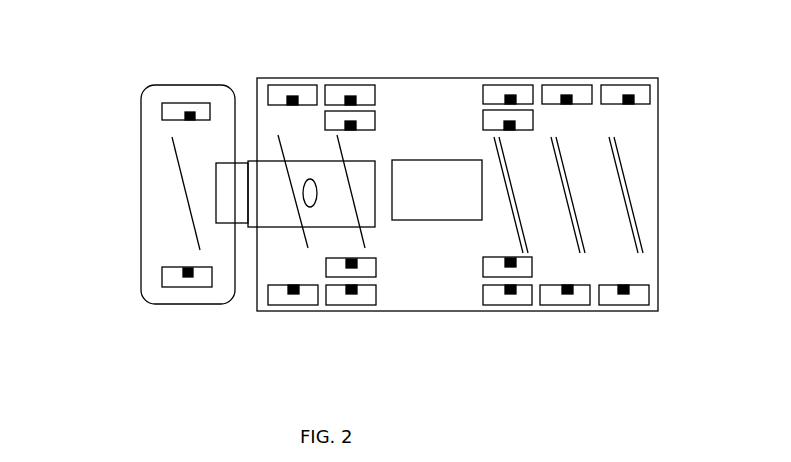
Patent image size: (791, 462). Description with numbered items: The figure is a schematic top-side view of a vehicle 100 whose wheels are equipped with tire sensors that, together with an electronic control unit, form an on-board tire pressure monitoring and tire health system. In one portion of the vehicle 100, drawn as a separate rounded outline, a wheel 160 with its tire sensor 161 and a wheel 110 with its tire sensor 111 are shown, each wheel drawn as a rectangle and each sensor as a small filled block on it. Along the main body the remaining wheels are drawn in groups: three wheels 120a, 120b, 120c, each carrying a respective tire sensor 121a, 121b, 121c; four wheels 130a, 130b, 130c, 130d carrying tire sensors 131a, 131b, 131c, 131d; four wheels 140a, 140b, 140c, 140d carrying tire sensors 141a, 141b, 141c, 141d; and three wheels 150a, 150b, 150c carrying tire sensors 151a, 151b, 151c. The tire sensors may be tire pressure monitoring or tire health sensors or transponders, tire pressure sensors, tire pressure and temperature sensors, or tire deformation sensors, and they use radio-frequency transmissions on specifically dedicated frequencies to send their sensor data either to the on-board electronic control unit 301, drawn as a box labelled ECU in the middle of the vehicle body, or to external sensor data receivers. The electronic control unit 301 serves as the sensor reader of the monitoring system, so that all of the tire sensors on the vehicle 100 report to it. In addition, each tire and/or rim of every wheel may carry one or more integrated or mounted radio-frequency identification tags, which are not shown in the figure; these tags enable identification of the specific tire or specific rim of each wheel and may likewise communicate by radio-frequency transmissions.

The vehicle 100 is at (114, 69).
The wheel 110 is at (188, 288).
The tire sensor 111 is at (188, 268).
The wheel 160 is at (185, 103).
The tire sensor 161 is at (190, 121).
The wheel 120a is at (282, 305).
The wheel 120b is at (351, 305).
The wheel 120c is at (330, 278).
The tire sensor 121a is at (290, 285).
The tire sensor 121b is at (357, 289).
The tire sensor 121c is at (357, 263).
The wheel 130a is at (510, 305).
The wheel 130b is at (523, 277).
The wheel 130c is at (573, 305).
The wheel 130d is at (628, 305).
The tire sensor 131a is at (500, 305).
The tire sensor 131b is at (508, 258).
The tire sensor 131c is at (568, 285).
The tire sensor 131d is at (623, 286).
The wheel 140a is at (508, 85).
The wheel 140b is at (529, 110).
The wheel 140c is at (567, 85).
The wheel 140d is at (625, 85).
The tire sensor 141a is at (505, 97).
The tire sensor 141b is at (510, 130).
The tire sensor 141c is at (567, 104).
The tire sensor 141d is at (628, 104).
The wheel 150a is at (295, 85).
The wheel 150b is at (355, 85).
The wheel 150c is at (333, 111).
The tire sensor 151a is at (292, 105).
The tire sensor 151b is at (355, 99).
The tire sensor 151c is at (355, 125).
The ECU (electronic control unit) 301 is at (423, 186).